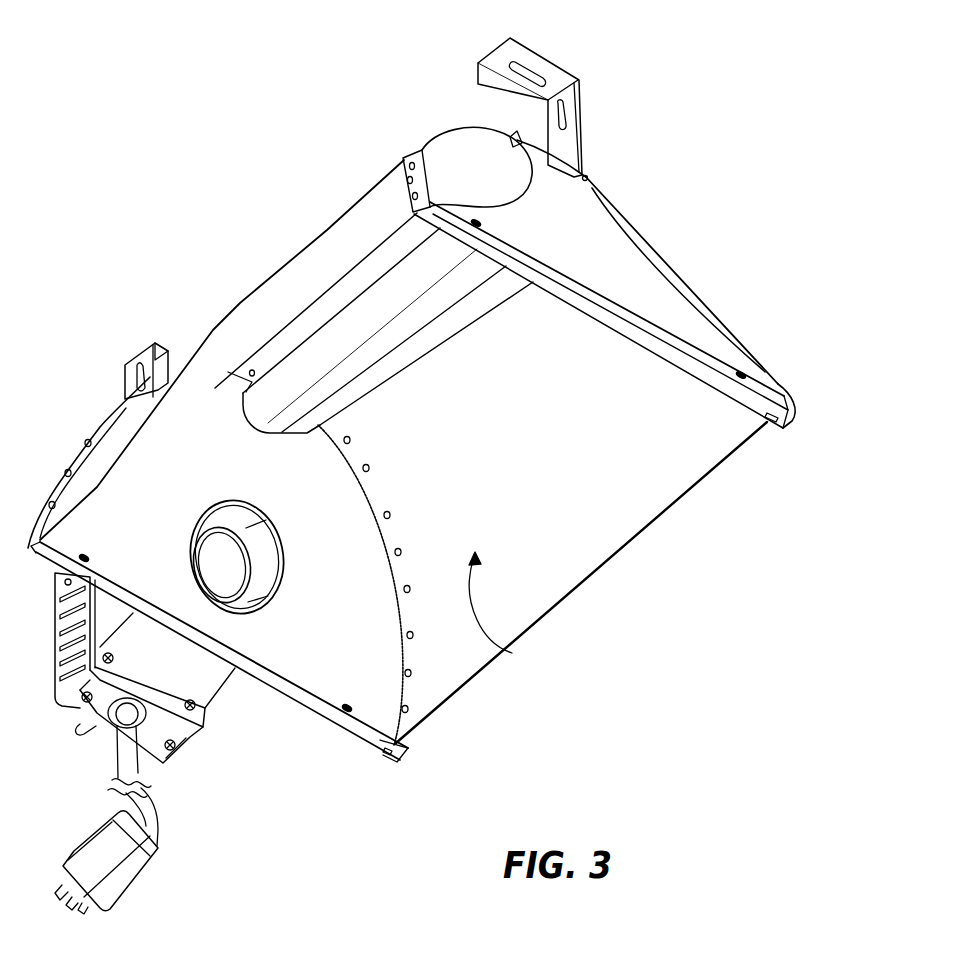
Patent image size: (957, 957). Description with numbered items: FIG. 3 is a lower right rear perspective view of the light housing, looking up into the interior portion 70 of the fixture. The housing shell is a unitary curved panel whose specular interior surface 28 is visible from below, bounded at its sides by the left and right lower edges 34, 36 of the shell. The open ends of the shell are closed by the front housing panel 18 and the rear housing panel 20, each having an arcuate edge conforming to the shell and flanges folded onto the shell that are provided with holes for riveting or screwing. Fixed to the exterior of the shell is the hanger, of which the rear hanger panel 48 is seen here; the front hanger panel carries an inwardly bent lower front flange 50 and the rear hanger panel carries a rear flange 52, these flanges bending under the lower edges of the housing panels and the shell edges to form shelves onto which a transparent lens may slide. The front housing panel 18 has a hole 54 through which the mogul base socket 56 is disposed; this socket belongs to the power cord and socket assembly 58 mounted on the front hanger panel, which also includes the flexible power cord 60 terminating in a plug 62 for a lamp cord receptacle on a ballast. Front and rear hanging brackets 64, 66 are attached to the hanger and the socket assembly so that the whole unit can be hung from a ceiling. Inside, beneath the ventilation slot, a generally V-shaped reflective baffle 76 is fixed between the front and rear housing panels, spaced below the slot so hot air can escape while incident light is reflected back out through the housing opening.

The front housing panel 18 is at (360, 687).
The rear housing panel 20 is at (670, 266).
The specular interior surface 28 is at (520, 422).
The left lower edge 34 is at (608, 560).
The right lower edge 36 is at (203, 402).
The rear hanger panel 48 is at (591, 247).
The lower front flange 50 is at (332, 722).
The rear flange 52 is at (742, 399).
The hole 54 is at (293, 537).
The mogul base socket 56 is at (237, 613).
The power cord and socket assembly 58 is at (55, 647).
The flexible power cord 60 is at (118, 746).
The plug 62 is at (96, 837).
The front hanging bracket 64 is at (136, 355).
The rear hanging bracket 66 is at (556, 64).
The interior portion 70 is at (512, 653).
The reflective baffle 76 is at (343, 333).